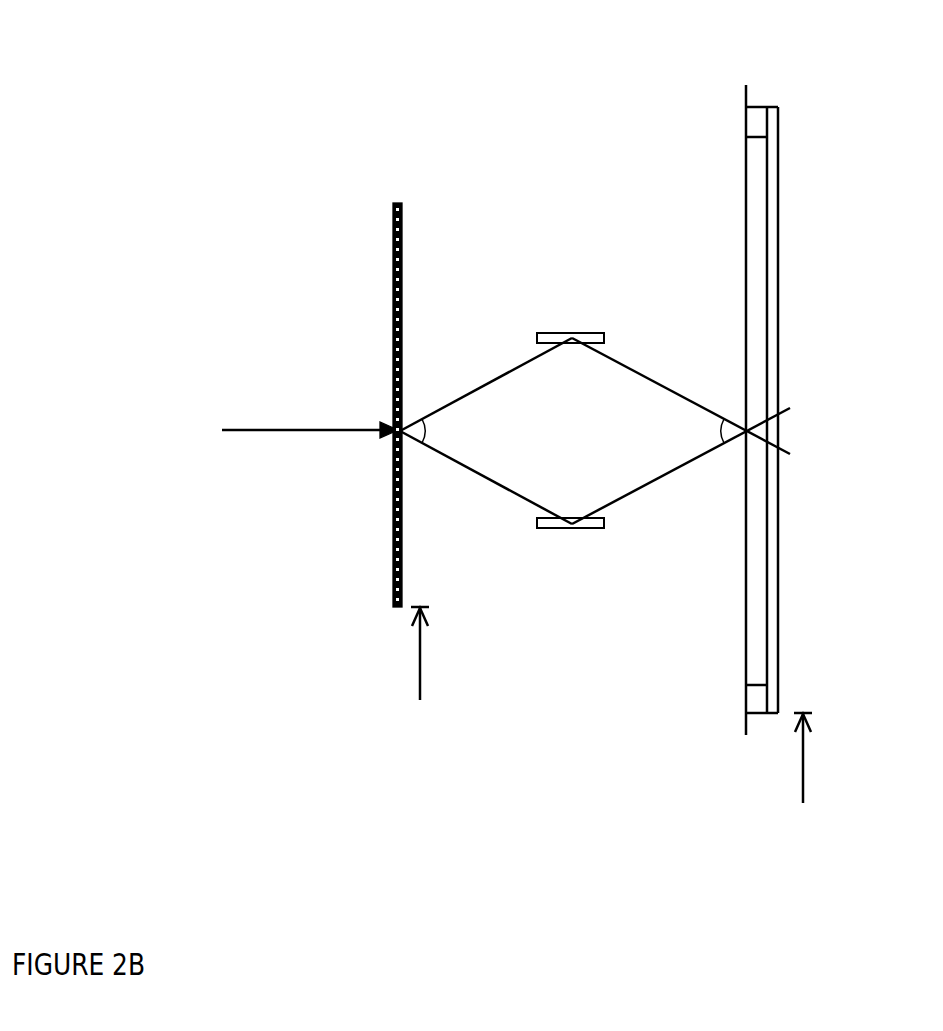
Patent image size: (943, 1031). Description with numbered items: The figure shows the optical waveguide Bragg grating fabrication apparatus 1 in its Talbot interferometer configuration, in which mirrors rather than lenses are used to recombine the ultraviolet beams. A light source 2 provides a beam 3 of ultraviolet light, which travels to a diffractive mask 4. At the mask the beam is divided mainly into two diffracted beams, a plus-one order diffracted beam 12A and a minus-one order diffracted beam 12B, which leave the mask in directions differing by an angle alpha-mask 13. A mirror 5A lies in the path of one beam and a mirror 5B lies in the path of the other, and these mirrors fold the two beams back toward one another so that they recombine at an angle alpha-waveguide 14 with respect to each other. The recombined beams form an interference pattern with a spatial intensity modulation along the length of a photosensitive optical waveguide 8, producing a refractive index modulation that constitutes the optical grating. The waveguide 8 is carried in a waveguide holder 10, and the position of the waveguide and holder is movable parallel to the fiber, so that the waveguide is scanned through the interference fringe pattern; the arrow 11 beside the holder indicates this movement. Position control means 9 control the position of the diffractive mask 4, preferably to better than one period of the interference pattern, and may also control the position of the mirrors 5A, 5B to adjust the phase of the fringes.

The optical waveguide Bragg grating fabrication apparatus 1 is at (525, 155).
The light source 2 is at (182, 425).
The beam 3 is at (310, 415).
The diffractive mask 4 is at (394, 223).
The mirror 5A is at (580, 337).
The mirror 5B is at (580, 523).
The photosensitive optical waveguide 8 is at (745, 150).
The position control means 9 is at (429, 653).
The waveguide holder 10 is at (779, 228).
The direction of movement of detector plate 11 is at (818, 758).
The +1 order diffracted beam 12A is at (480, 388).
The -1 order diffracted beam 12B is at (481, 474).
The angle alpha_mask 13 is at (428, 431).
The angle alpha_waveguide 14 is at (716, 431).